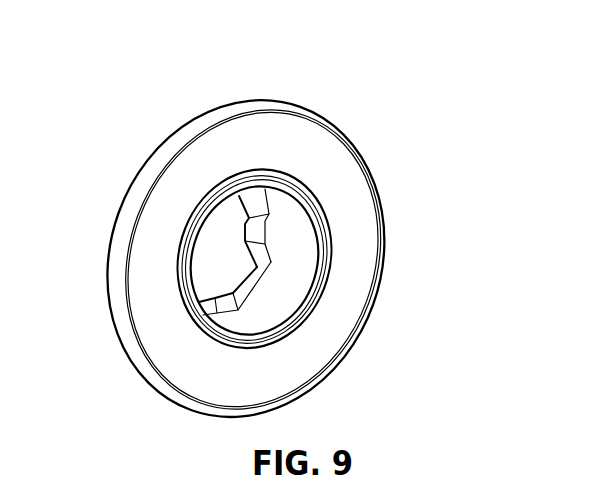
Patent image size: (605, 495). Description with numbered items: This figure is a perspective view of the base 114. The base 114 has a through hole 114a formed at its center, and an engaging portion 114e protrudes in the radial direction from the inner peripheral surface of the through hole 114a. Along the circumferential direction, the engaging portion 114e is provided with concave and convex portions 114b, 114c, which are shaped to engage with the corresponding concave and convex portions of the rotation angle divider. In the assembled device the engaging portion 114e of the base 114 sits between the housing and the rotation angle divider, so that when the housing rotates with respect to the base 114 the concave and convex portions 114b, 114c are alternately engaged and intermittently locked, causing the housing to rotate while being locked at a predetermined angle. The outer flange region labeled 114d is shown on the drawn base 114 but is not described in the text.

The base 114 is at (207, 118).
The through hole 114a is at (205, 277).
The concave portion 114b is at (245, 286).
The convex portion 114c is at (261, 231).
The outer flange 114d is at (370, 210).
The engaging portion 114e is at (472, 263).